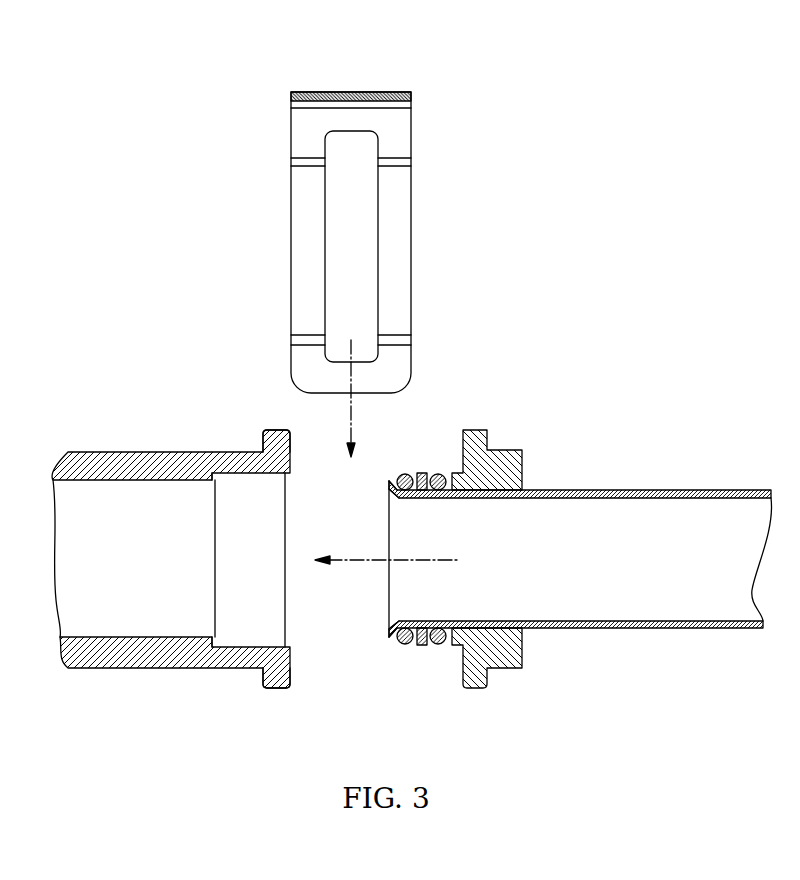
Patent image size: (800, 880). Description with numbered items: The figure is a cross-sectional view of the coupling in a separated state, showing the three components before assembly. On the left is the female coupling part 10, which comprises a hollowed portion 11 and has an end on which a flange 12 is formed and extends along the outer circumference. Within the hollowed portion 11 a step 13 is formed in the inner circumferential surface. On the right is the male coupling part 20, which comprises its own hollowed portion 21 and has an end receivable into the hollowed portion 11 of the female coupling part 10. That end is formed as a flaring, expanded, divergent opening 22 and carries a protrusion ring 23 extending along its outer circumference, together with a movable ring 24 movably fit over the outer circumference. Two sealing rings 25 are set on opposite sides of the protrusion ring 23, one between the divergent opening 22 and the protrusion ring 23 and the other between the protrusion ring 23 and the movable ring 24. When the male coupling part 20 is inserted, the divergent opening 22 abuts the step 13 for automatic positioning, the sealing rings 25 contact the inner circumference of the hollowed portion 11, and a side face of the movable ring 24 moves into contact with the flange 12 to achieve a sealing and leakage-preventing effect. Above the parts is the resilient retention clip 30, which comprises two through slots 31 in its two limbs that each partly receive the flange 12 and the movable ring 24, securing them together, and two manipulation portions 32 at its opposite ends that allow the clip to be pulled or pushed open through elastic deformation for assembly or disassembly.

The female coupling part 10 is at (143, 452).
The hollowed portion 11 is at (147, 610).
The flange 12 is at (275, 432).
The step 13 is at (222, 452).
The male coupling part 20 is at (617, 490).
The hollowed portion 21 is at (633, 596).
The divergent opening 22 is at (388, 486).
The protrusion ring 23 is at (422, 473).
The movable ring 24 is at (513, 460).
The sealing rings 25 is at (405, 474).
The retention clip 30 is at (395, 92).
The through slots 31 is at (350, 241).
The manipulation portion 32 is at (397, 358).